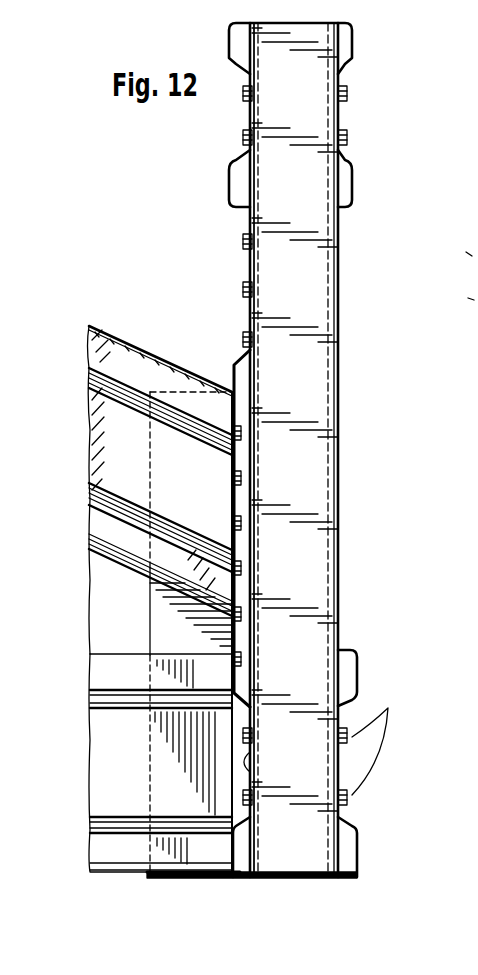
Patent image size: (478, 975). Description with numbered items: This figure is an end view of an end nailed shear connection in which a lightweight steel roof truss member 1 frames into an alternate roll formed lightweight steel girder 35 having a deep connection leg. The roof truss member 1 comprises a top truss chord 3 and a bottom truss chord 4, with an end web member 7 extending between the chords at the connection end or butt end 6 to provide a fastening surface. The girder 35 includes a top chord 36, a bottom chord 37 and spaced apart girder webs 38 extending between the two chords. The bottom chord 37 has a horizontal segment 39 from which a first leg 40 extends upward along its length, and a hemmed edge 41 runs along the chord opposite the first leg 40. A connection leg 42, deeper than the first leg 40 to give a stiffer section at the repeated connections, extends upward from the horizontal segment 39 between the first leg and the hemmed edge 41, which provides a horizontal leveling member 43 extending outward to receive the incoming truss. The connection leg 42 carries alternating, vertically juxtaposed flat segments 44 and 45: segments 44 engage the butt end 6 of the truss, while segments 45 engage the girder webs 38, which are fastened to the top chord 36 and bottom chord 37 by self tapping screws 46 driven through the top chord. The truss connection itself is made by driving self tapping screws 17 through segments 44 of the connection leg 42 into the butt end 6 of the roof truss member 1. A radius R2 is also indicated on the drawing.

The lightweight steel roof truss member 1 is at (68, 388).
The top truss chord 3 is at (113, 467).
The bottom truss chord 4 is at (118, 668).
The connection end or butt end 6 is at (300, 570).
The end web member 7 is at (153, 617).
The self tapping screws 17 is at (241, 432).
The roll formed lightweight steel girder 35 is at (362, 250).
The top chord 36 is at (355, 66).
The bottom chord 37 is at (363, 830).
The girder webs 38 is at (250, 175).
The horizontal segment 39 is at (338, 893).
The first leg 40 is at (358, 673).
The hemmed edge 41 is at (147, 875).
The connection leg 42 is at (240, 694).
The horizontal leveling member 43 is at (187, 870).
The segments 44 is at (238, 365).
The segments 45 is at (248, 268).
The self tapping screws 46 is at (248, 292).
The radius R2 is at (477, 349).